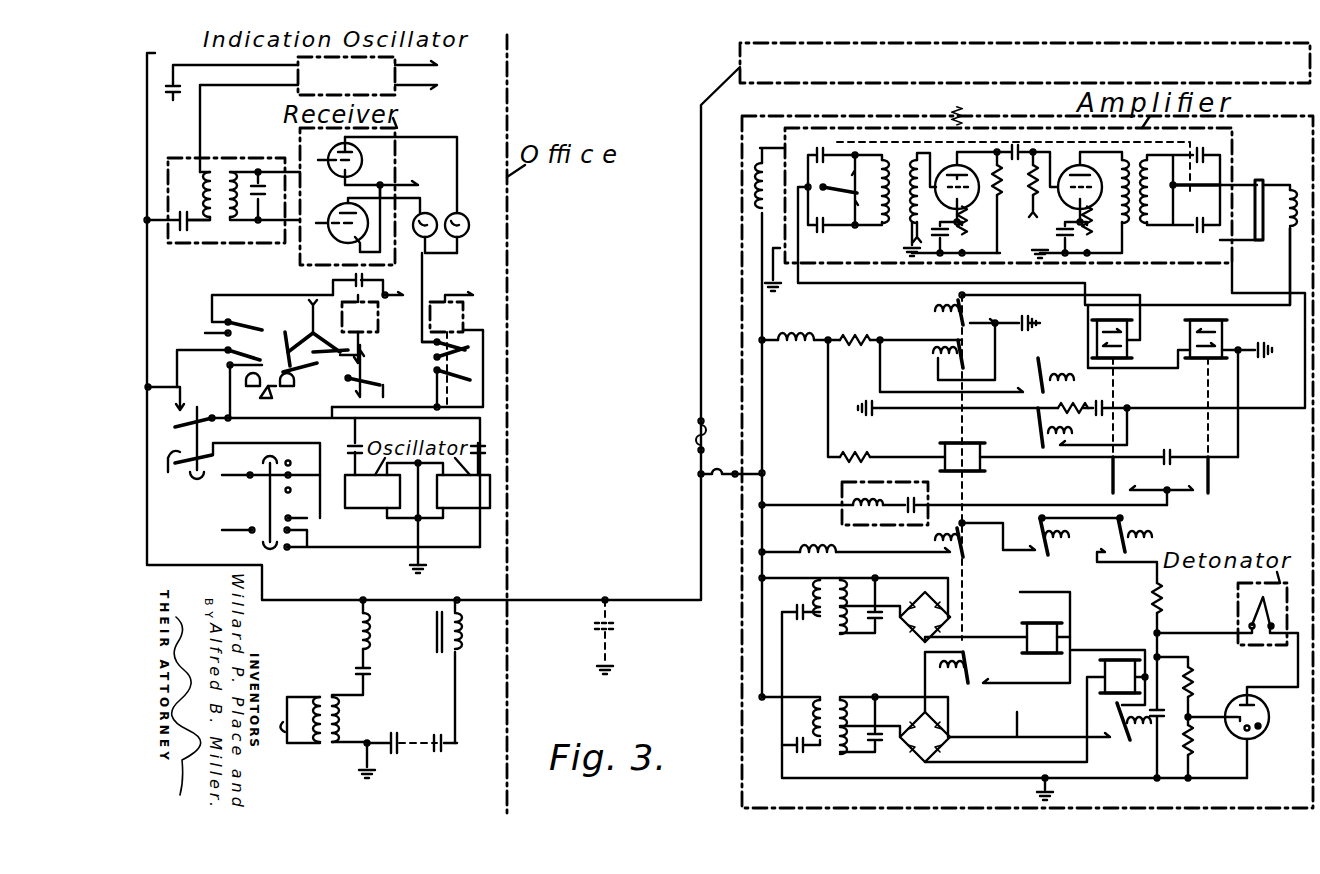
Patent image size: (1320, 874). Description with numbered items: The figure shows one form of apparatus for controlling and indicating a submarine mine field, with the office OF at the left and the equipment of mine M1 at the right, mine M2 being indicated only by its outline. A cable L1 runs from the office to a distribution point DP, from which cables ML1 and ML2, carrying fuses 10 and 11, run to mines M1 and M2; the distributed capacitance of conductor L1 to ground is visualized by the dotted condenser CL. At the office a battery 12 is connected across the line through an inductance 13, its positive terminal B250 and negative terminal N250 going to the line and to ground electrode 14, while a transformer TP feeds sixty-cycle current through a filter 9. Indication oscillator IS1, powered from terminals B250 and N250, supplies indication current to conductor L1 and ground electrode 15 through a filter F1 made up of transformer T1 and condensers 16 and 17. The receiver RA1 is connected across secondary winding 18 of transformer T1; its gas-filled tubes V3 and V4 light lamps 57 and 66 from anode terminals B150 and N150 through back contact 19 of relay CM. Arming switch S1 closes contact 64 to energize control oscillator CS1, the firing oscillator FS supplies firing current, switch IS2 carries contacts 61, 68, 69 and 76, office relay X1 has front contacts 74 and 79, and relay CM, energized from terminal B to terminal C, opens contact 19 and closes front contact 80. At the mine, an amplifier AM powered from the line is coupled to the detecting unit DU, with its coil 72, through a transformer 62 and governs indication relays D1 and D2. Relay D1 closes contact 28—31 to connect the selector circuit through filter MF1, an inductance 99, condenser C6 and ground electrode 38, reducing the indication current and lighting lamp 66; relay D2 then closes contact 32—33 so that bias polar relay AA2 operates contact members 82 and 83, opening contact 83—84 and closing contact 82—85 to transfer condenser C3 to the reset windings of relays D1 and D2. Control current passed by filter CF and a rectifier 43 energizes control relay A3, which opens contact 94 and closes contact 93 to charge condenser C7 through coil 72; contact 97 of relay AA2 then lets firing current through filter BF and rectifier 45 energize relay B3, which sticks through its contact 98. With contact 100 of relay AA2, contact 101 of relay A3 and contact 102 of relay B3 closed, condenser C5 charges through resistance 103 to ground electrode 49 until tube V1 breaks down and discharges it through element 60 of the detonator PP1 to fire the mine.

The filter 9 is at (355, 638).
The fuse 10 is at (731, 489).
The fuse 11 is at (698, 436).
The battery 12 is at (396, 735).
The inductance 13 is at (465, 632).
The ground electrode 14 is at (375, 775).
The ground electrode 15 is at (173, 96).
The condenser 16 is at (186, 232).
The condenser 17 is at (255, 200).
The secondary winding 18 is at (240, 180).
The back contact 19 is at (466, 320).
The contact 28 is at (1110, 480).
The contact 31 is at (1160, 486).
The contact 32 is at (1210, 480).
The contact 33 is at (1190, 493).
The ground electrode 38 is at (1266, 360).
The rectifier 43 is at (915, 635).
The rectifier 45 is at (950, 745).
The ground electrode 49 is at (1052, 792).
The lamp 57 is at (475, 211).
The element 60 is at (1250, 615).
The contact 61 is at (305, 348).
The transformer 62 is at (178, 410).
The contact 64 is at (288, 525).
The lamp 66 is at (433, 209).
The contact 68 is at (282, 350).
The contact 69 is at (263, 328).
The coil 72 is at (1298, 196).
The front contact 74 is at (380, 352).
The contact 76 is at (300, 372).
The front contact 79 is at (378, 386).
The front contact 80 is at (440, 390).
The contact member 82 is at (945, 318).
The contact member 83 is at (976, 355).
The contact 84 is at (940, 362).
The contact 85 is at (978, 342).
The contact 93 is at (1040, 396).
The contact 94 is at (1081, 355).
The contact 97 is at (970, 688).
The contact 98 is at (1050, 721).
The inductance coil 99 is at (824, 550).
The contact 100 is at (958, 560).
The contact 101 is at (1061, 549).
The contact 102 is at (1117, 552).
The resistance 103 is at (1179, 608).
The indication oscillator IS1 is at (388, 47).
The switch IS2 is at (275, 398).
The filter F1 is at (192, 160).
The transformer T1 is at (220, 168).
The receiver RA1 is at (298, 265).
The gas filled electron tube V3 is at (387, 175).
The gas filled electron tube V4 is at (343, 218).
The tube V1 is at (1269, 723).
The terminal N150 is at (413, 189).
The positive terminal B250 is at (442, 760).
The negative terminal N250 is at (343, 757).
The terminal B150 is at (322, 444).
The terminal B is at (252, 317).
The terminal C is at (410, 288).
The office relay X1 is at (372, 312).
The relay CM is at (460, 308).
The arming switch S1 is at (268, 463).
The firing oscillator FS is at (380, 508).
The control oscillator CS1 is at (470, 508).
The transformer TP is at (332, 690).
The condenser CL is at (625, 636).
The office OF is at (507, 235).
The cable L1 is at (698, 560).
The cable ML1 is at (762, 473).
The cable ML2 is at (700, 360).
The distribution point DP is at (698, 475).
The mine M1 is at (778, 116).
The mine M2 is at (740, 55).
The amplifier AM is at (1028, 125).
The detecting unit DU is at (1265, 224).
The indication relay D1 is at (1130, 330).
The indication relay D2 is at (1203, 318).
The condenser C3 is at (1021, 340).
The condenser C5 is at (1155, 738).
The condenser C6 is at (1175, 446).
The condenser C7 is at (1078, 386).
The bias polar relay AA2 is at (959, 442).
The filter MF1 is at (842, 490).
The detonator plug PP1 is at (1238, 590).
The filter CF is at (828, 620).
The filter BF is at (832, 700).
The control relay A3 is at (1037, 624).
The control relay B3 is at (1120, 658).